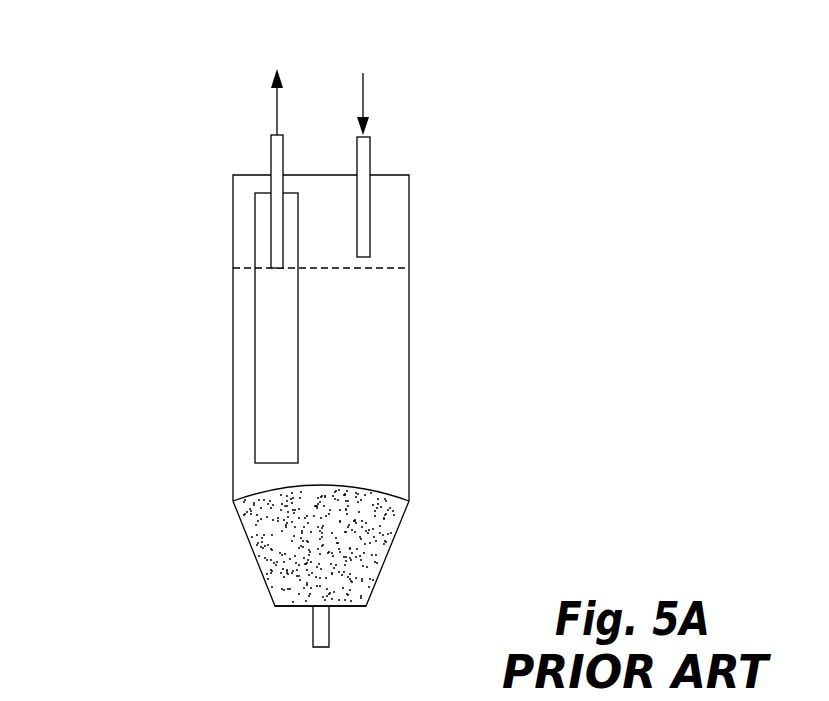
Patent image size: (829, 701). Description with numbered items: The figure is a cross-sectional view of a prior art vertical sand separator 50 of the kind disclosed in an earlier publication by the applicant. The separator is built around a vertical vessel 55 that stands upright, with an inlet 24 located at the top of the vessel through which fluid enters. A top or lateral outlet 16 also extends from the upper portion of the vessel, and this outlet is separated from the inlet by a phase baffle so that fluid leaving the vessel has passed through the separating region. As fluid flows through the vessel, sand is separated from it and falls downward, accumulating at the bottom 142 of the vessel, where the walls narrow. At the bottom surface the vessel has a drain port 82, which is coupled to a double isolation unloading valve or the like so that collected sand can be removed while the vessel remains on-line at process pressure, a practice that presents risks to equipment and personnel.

The vertical sand separator 50 is at (150, 84).
The vertical vessel 55 is at (232, 335).
The top or lateral outlet 16 is at (283, 145).
The inlet 24 is at (370, 157).
The drain port 82 is at (311, 625).
The bottom 142 is at (348, 608).